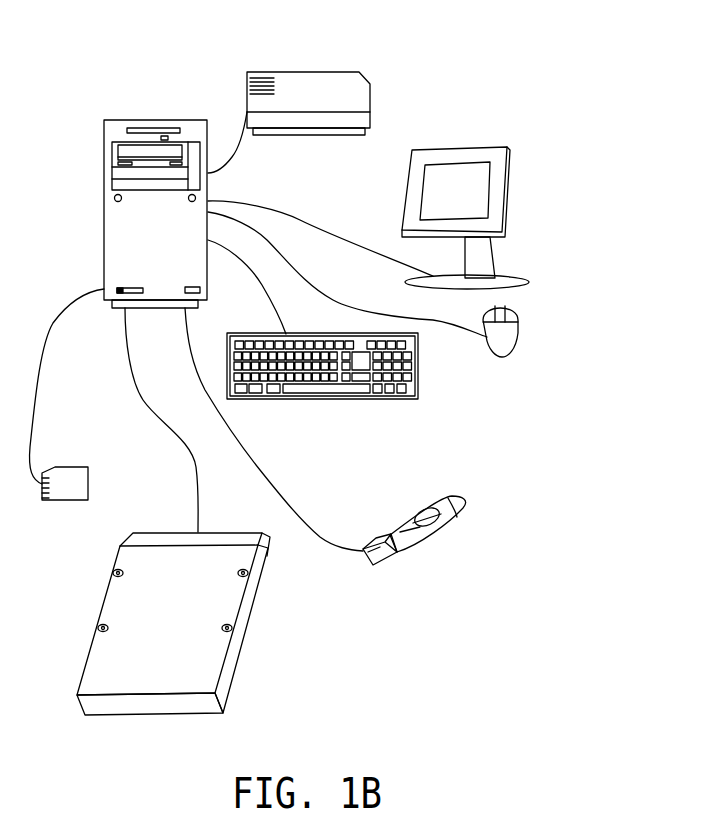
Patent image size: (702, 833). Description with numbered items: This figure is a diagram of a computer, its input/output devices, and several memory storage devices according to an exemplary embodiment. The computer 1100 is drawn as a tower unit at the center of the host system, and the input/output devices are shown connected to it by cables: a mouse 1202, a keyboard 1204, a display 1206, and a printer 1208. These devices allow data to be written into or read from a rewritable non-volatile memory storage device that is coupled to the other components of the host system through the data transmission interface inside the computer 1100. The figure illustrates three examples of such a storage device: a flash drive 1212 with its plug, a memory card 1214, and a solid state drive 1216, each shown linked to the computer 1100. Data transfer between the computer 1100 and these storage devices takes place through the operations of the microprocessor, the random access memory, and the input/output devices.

The computer 1100 is at (158, 120).
The mouse 1202 is at (518, 335).
The keyboard 1204 is at (417, 377).
The display 1206 is at (465, 148).
The printer 1208 is at (303, 72).
The flash drive 1212 is at (412, 517).
The memory card 1214 is at (90, 473).
The solid state drive 1216 is at (224, 517).